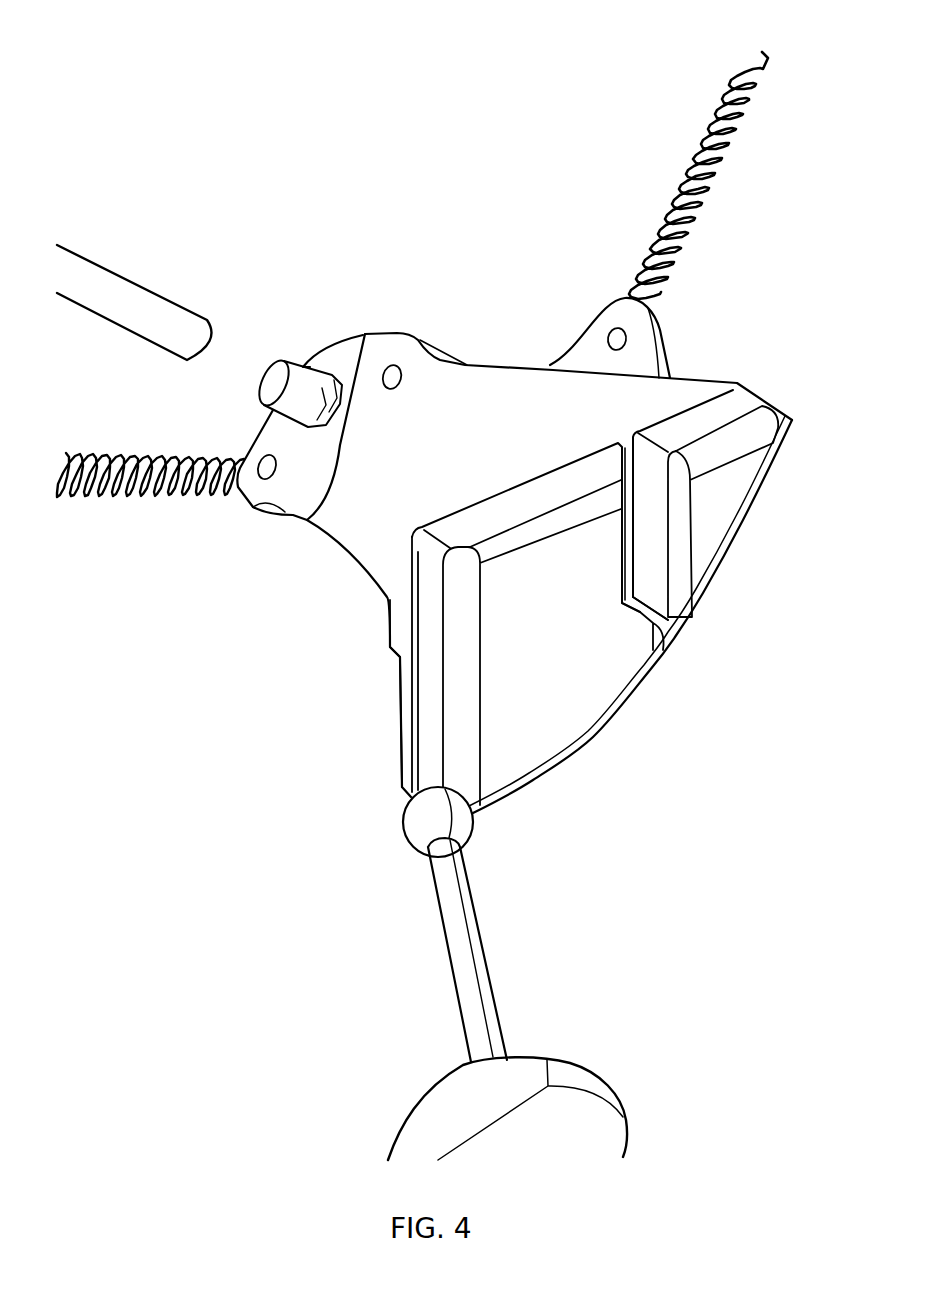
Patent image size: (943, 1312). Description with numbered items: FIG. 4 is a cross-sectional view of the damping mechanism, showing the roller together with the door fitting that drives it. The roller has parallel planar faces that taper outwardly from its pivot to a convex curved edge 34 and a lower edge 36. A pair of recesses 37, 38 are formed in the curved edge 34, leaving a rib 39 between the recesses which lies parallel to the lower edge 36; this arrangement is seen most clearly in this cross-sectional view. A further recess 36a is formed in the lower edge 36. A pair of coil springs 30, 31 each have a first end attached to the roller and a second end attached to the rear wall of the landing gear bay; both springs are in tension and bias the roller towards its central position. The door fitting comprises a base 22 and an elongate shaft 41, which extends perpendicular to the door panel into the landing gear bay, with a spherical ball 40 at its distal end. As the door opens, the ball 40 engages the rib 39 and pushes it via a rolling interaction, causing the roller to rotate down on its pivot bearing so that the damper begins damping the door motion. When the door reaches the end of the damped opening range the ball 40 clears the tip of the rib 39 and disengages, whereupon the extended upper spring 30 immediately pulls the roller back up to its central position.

The base 22 is at (567, 1062).
The coil spring 30 is at (658, 232).
The coil spring 31 is at (165, 488).
The convex curved edge 34 is at (596, 736).
The lower edge 36 is at (435, 745).
The recess 36a is at (400, 697).
The recess 37 is at (556, 618).
The recess 38 is at (736, 512).
The rib 39 is at (640, 611).
The spherical ball 40 is at (407, 838).
The elongate shaft 41 is at (484, 936).